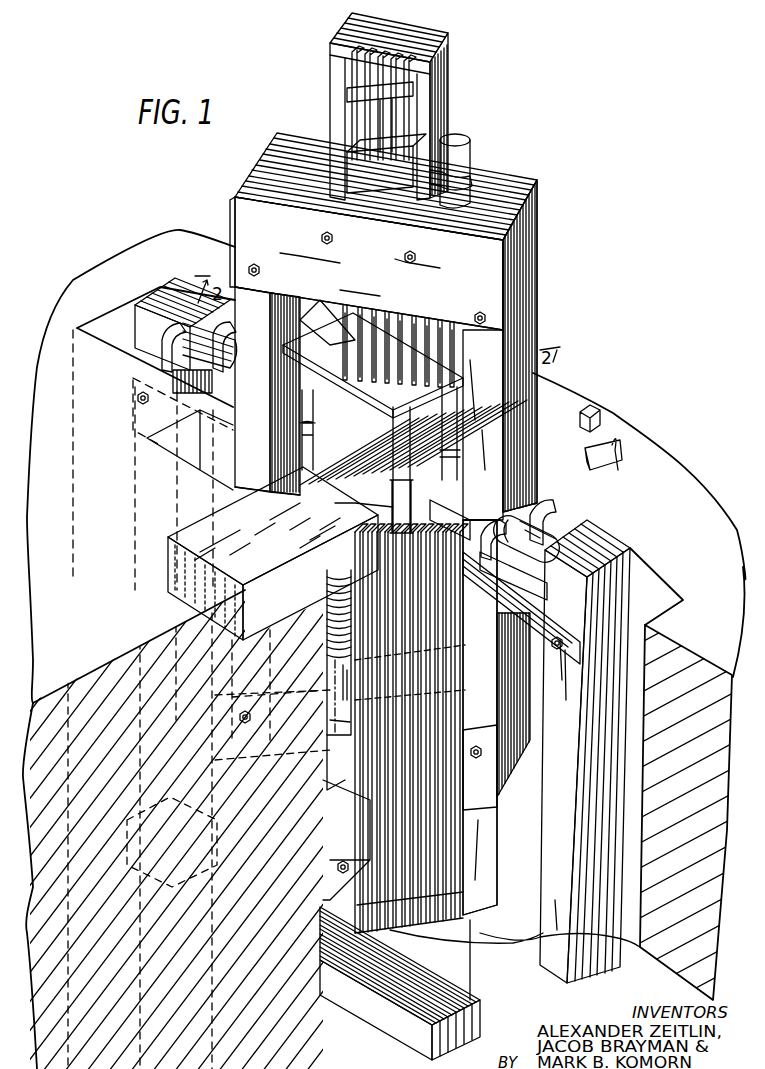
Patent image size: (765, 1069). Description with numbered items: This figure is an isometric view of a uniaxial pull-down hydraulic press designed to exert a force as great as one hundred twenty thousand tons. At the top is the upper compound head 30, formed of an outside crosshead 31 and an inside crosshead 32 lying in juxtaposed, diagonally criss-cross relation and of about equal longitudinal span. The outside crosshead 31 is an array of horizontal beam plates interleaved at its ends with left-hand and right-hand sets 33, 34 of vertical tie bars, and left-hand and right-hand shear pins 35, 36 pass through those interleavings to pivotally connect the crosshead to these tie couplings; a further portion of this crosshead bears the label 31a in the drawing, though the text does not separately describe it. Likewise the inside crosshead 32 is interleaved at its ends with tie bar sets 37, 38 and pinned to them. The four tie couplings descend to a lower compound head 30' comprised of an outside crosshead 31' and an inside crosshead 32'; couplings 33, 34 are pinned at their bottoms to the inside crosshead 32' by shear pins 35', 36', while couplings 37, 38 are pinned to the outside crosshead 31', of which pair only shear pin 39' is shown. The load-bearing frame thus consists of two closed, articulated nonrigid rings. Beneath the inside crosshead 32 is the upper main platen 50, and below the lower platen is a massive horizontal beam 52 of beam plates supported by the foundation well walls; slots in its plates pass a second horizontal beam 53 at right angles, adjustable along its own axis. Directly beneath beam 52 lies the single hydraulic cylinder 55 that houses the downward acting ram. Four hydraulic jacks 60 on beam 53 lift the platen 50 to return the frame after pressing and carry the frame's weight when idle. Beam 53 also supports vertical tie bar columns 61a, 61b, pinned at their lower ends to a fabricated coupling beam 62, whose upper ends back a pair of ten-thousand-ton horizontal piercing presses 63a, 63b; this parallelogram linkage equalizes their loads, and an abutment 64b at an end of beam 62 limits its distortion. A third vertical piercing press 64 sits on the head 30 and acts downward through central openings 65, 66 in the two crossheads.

The upper compound head 30 is at (422, 346).
The lower compound head 30' is at (500, 717).
The outside crosshead 31 is at (400, 263).
The outside crosshead of lower head 31' is at (484, 760).
The frame column 31a is at (369, 403).
The inside crosshead 32 is at (373, 359).
The inside crosshead of lower head 32' is at (496, 721).
The left-hand set of vertical tie bars 33 is at (250, 484).
The right-hand set of vertical tie bars 34 is at (500, 416).
The left-hand shear pin 35 is at (247, 256).
The shear pin 35' is at (272, 726).
The right-hand shear pin 36 is at (403, 278).
The shear pin 36' is at (501, 775).
The set of vertical tie bars 37 is at (330, 400).
The set of vertical tie bars 38 is at (440, 700).
The shear pin 39' is at (345, 840).
The upper main platen 50 is at (378, 398).
The horizontal beam 52 is at (305, 558).
The second horizontal beam 53 is at (540, 633).
The hydraulic cylinder 55 is at (337, 597).
The hydraulic jacks 60 is at (305, 448).
The vertical tie bar column 61a is at (618, 703).
The vertical tie bar column 61b is at (136, 418).
The fabricated coupling beam 62 is at (365, 998).
The horizontal piercing press 63a is at (540, 530).
The horizontal piercing press 63b is at (230, 347).
The vertical piercing press 64 is at (466, 94).
The abutment 64b is at (133, 838).
The central opening 65 is at (311, 150).
The central opening 66 is at (403, 318).